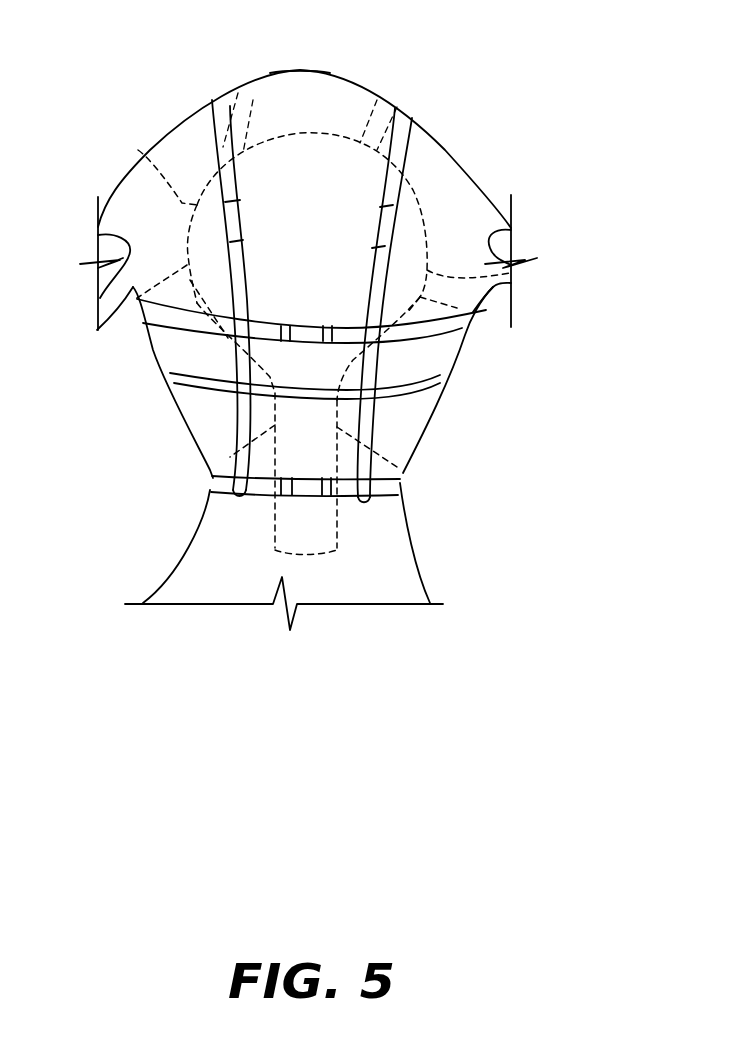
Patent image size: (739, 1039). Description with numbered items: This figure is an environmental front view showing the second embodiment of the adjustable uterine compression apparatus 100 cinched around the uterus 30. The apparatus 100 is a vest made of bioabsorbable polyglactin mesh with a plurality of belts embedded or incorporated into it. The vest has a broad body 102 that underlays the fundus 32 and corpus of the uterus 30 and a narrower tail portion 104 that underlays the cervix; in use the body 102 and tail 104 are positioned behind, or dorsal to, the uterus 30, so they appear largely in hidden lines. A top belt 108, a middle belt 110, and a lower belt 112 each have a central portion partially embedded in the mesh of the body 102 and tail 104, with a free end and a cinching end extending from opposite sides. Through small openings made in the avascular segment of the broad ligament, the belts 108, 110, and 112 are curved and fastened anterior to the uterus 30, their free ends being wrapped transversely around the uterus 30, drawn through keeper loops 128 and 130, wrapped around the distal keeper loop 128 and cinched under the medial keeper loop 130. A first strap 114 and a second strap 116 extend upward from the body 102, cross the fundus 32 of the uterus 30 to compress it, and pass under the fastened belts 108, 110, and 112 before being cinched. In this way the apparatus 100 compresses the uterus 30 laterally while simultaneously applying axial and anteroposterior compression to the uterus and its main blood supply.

The uterus 30 is at (163, 362).
The fundus 32 is at (300, 69).
The adjustable uterine compression apparatus 100 is at (432, 199).
The body 102 is at (134, 149).
The tail portion 104 is at (273, 523).
The top belt 108 is at (418, 341).
The middle belt 110 is at (170, 386).
The lower belt 112 is at (390, 485).
The first strap 114 is at (209, 137).
The second strap 116 is at (407, 136).
The distal keeper loop 128 is at (287, 325).
The medial keeper loop 130 is at (327, 325).